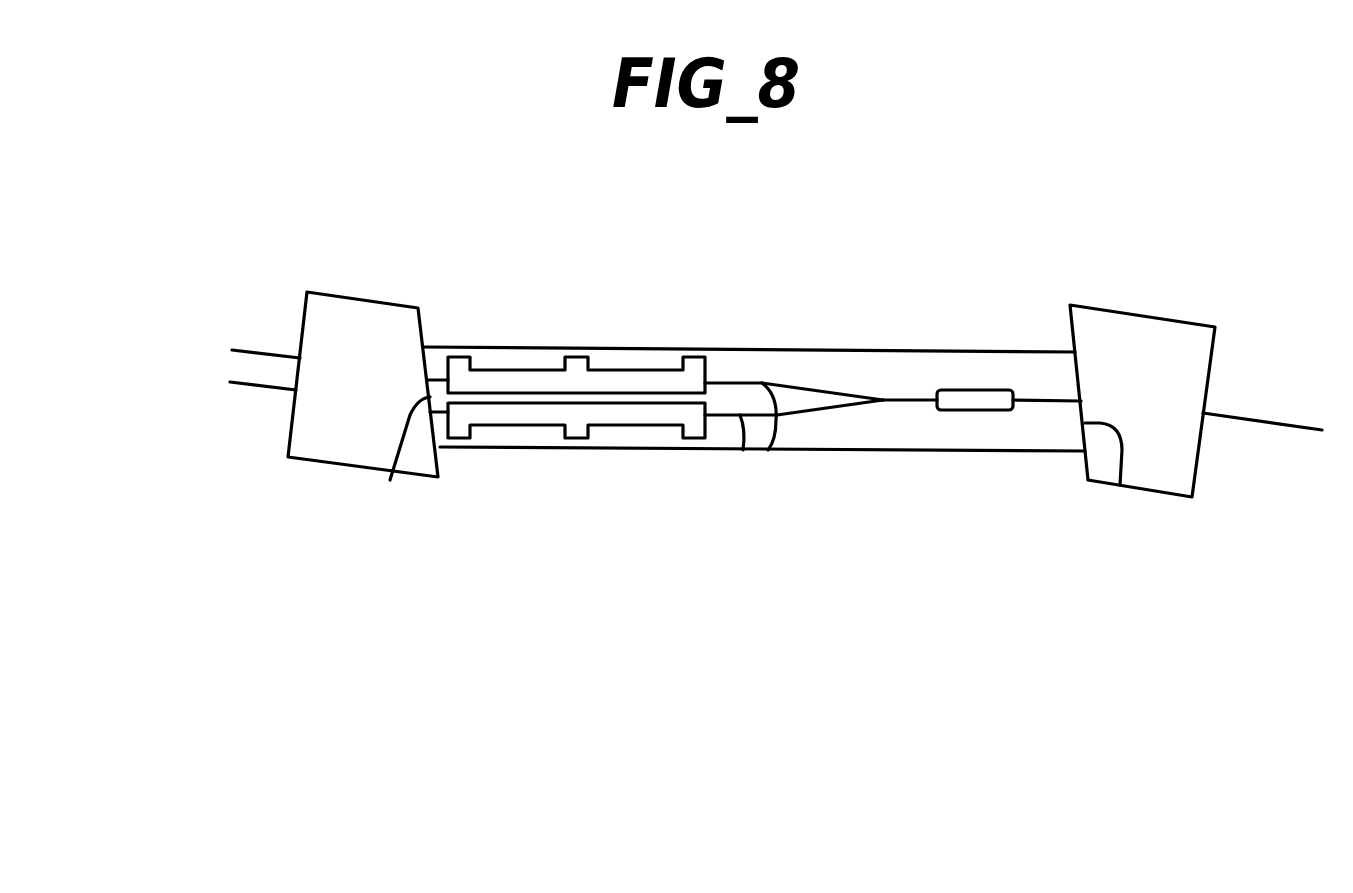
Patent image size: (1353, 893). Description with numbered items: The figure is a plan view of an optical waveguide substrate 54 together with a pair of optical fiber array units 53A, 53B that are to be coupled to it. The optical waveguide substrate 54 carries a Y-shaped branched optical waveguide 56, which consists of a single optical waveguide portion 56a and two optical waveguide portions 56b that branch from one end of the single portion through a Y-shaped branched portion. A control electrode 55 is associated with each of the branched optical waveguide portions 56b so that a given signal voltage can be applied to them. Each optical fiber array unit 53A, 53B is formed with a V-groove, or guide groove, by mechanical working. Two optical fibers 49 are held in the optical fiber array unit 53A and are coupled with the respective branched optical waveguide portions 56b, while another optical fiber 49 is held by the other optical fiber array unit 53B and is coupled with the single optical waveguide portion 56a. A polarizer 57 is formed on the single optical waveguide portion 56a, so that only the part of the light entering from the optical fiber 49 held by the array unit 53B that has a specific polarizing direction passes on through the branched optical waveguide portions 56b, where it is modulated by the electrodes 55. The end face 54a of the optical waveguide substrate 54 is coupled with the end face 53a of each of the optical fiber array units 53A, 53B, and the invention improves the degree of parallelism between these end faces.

The optical fiber 49 is at (262, 354).
The optical fiber array unit 53A is at (362, 322).
The optical fiber array unit 53B is at (1142, 335).
The end face 53a is at (442, 462).
The optical waveguide substrate 54 is at (892, 360).
The end face 54a is at (390, 480).
The control electrode 55 is at (620, 410).
The Y-shaped branched optical waveguide 56 is at (790, 381).
The single optical waveguide portion 56a is at (1033, 397).
The optical waveguide portions 56b is at (768, 450).
The polarizer 57 is at (965, 410).